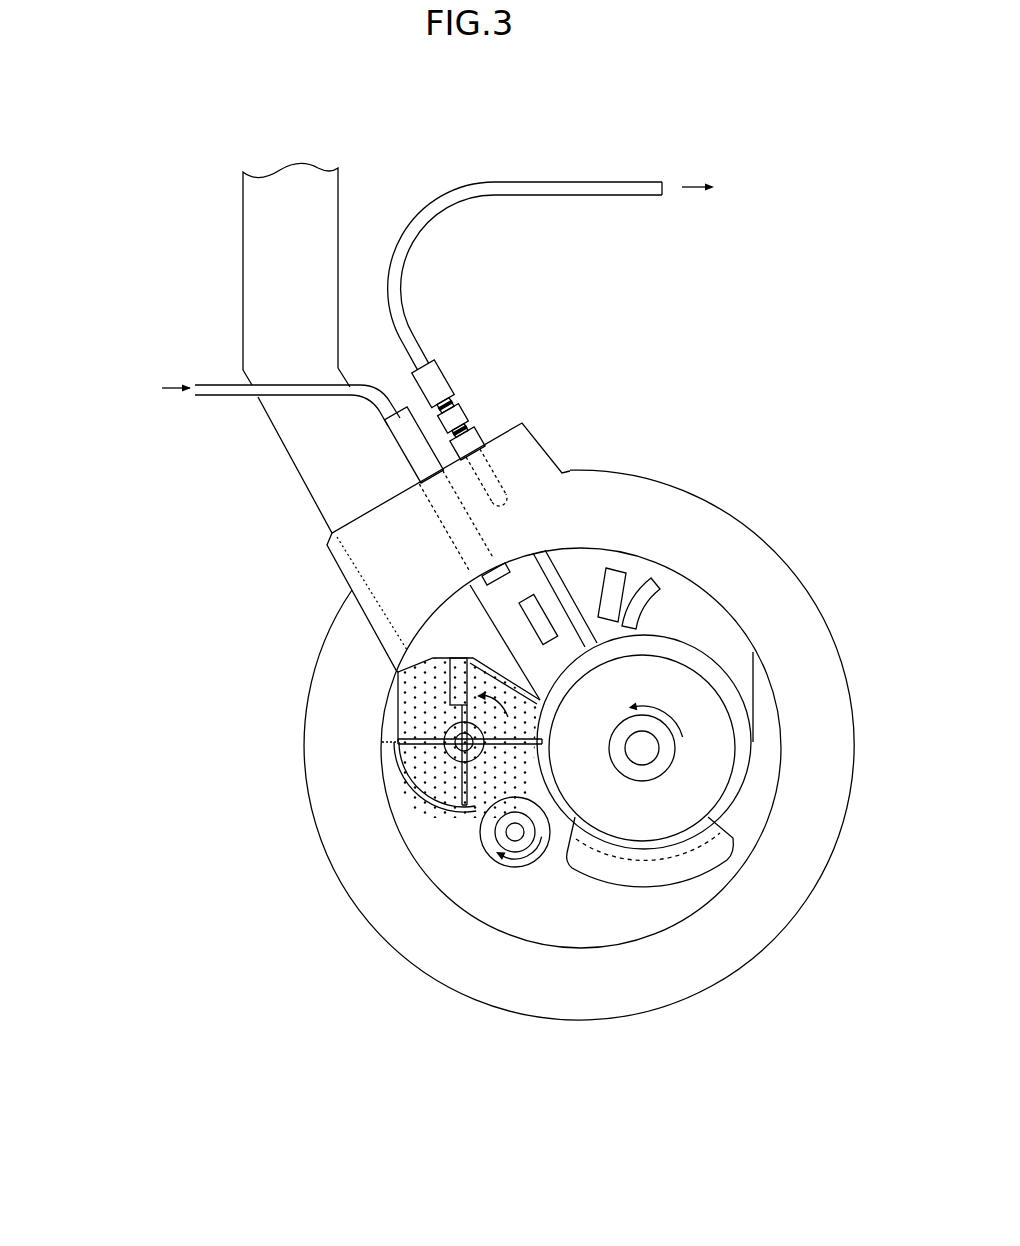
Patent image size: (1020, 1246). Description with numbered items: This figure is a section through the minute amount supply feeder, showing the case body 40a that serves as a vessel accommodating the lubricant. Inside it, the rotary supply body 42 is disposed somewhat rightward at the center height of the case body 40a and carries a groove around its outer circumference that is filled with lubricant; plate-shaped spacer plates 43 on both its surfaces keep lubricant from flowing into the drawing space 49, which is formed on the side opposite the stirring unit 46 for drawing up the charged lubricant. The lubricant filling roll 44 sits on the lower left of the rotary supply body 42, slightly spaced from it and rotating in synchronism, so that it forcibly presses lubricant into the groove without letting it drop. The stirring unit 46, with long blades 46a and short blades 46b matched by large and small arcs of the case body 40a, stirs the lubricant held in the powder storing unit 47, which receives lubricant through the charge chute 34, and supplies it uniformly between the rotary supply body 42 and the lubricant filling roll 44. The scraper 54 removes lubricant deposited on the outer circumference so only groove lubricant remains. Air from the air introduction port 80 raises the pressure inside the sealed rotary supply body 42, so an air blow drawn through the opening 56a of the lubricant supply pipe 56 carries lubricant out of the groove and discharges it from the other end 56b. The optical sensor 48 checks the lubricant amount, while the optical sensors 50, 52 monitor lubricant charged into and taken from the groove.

The charge chute 34 is at (263, 212).
The case body 40a is at (693, 990).
The rotary supply body 42 is at (705, 785).
The spacer plates 43 is at (702, 863).
The lubricant filling roll 44 is at (490, 843).
The stirring unit 46 is at (444, 750).
The long blades 46a is at (398, 727).
The short blades 46b is at (455, 785).
The powder storing unit 47 is at (420, 720).
The optical sensor 48 is at (405, 665).
The drawing space 49 is at (688, 610).
The optical sensor 50 is at (583, 653).
The optical sensor 52 is at (615, 575).
The scraper 54 is at (636, 625).
The lubricant supply pipe 56 is at (507, 512).
The opening 56a is at (617, 583).
The other end 56b is at (663, 192).
The air introduction port 80 is at (415, 422).